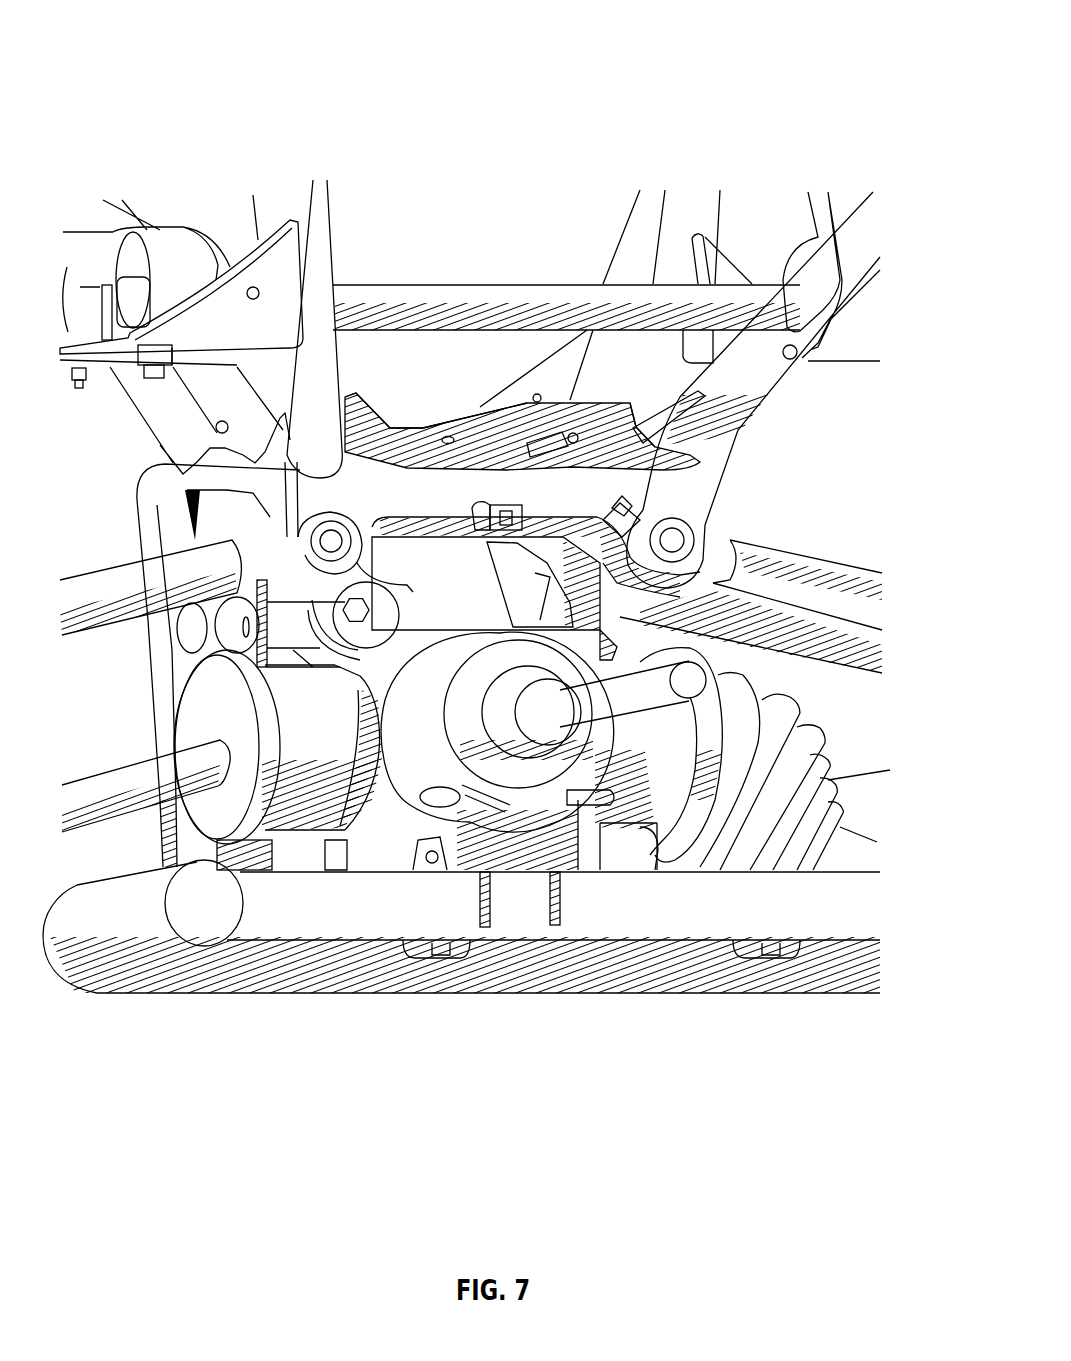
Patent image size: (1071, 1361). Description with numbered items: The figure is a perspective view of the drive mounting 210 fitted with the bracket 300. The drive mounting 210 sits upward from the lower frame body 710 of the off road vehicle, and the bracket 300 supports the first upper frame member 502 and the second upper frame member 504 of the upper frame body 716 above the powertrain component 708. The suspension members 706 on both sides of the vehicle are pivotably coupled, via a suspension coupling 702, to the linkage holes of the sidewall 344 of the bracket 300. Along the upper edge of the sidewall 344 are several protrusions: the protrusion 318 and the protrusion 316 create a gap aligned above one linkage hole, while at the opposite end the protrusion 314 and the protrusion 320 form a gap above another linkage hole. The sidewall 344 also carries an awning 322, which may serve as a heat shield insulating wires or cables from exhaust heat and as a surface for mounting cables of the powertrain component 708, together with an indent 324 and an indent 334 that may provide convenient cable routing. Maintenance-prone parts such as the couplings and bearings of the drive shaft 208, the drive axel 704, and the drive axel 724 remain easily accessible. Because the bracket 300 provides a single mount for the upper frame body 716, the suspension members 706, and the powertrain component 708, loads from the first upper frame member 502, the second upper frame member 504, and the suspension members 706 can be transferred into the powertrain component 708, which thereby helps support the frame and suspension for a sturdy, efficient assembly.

The drive mounting 210 is at (878, 72).
The upper frame body 716 is at (660, 277).
The bracket 300 is at (596, 390).
The protrusion 314 is at (363, 397).
The indent 334 is at (406, 415).
The awning 322 is at (467, 420).
The indent 324 is at (650, 400).
The second upper frame member 504 is at (310, 418).
The protrusion 320 is at (305, 478).
The first upper frame member 502 is at (747, 385).
The protrusion 316 is at (705, 397).
The protrusion 318 is at (733, 480).
The suspension coupling 702 is at (335, 537).
The sidewall 344 is at (589, 508).
The suspension members 706 is at (139, 605).
The powertrain component 708 is at (459, 605).
The drive axel 704 is at (137, 785).
The drive shaft 208 is at (627, 697).
The drive axel 724 is at (863, 803).
The lower frame body 710 is at (362, 985).